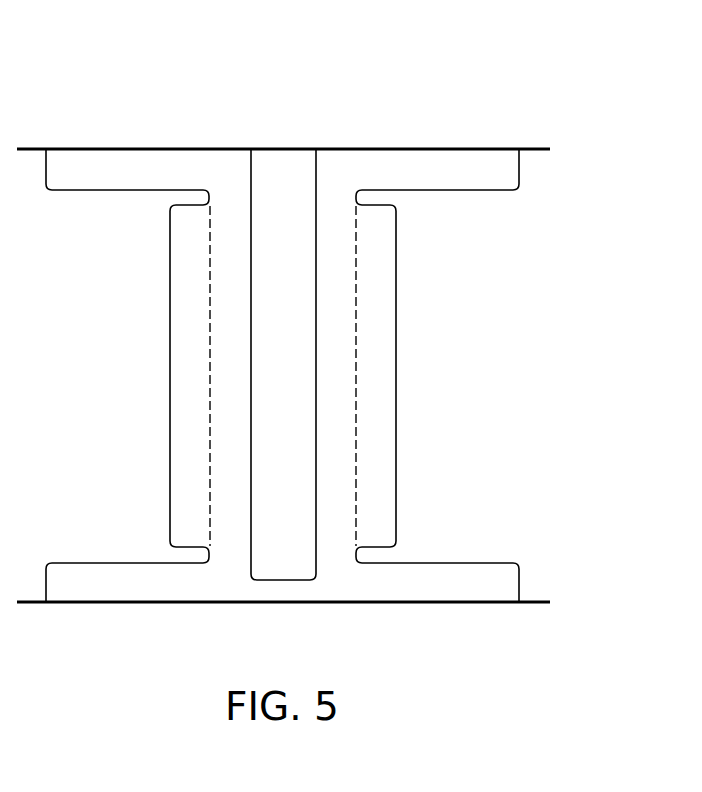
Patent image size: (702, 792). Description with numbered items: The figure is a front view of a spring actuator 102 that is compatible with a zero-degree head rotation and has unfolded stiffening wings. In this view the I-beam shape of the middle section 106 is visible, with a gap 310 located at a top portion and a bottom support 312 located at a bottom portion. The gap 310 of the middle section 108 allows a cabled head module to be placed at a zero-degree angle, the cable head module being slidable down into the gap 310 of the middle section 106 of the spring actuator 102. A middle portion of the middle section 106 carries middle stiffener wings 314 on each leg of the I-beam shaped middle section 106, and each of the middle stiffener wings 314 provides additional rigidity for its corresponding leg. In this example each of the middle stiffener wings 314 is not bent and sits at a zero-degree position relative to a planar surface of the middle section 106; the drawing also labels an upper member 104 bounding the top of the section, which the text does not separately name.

The spring actuator 102 is at (166, 72).
The first plate 104 is at (463, 148).
The middle section 106 is at (493, 173).
The middle section 108 is at (468, 604).
The gap 310 is at (281, 150).
The bottom support 312 is at (282, 582).
The middle stiffener wings 314 is at (188, 354).